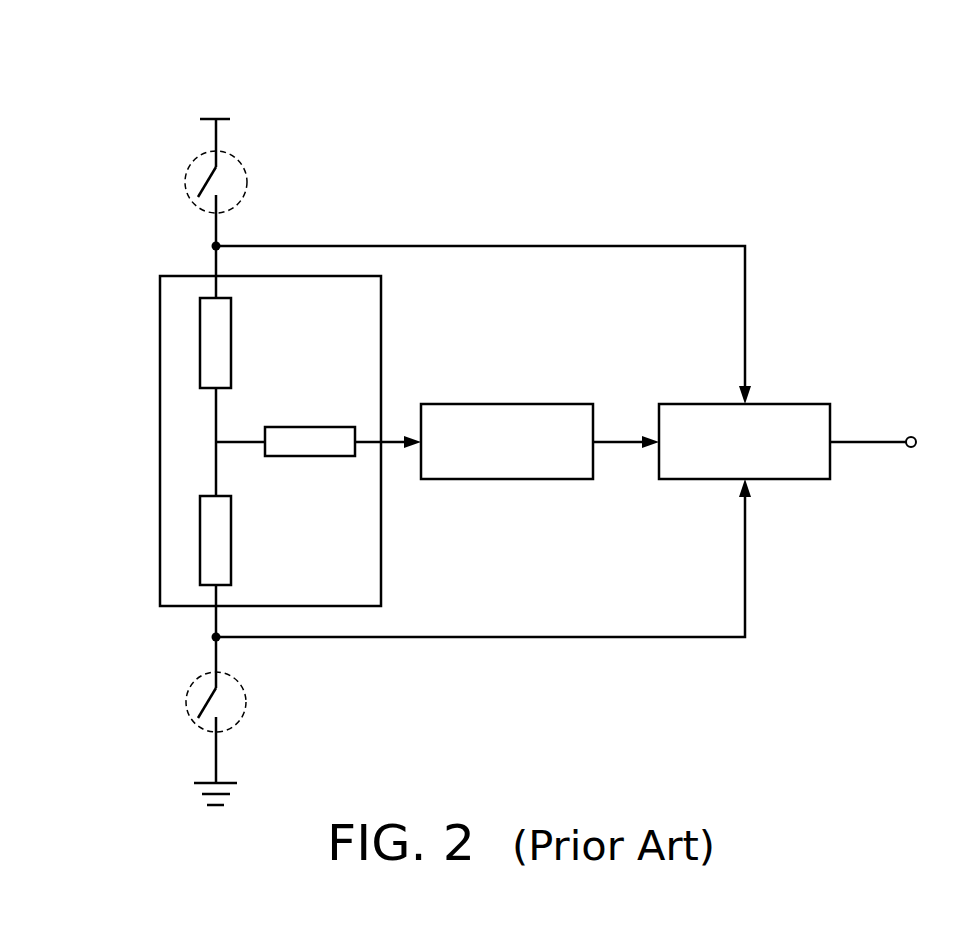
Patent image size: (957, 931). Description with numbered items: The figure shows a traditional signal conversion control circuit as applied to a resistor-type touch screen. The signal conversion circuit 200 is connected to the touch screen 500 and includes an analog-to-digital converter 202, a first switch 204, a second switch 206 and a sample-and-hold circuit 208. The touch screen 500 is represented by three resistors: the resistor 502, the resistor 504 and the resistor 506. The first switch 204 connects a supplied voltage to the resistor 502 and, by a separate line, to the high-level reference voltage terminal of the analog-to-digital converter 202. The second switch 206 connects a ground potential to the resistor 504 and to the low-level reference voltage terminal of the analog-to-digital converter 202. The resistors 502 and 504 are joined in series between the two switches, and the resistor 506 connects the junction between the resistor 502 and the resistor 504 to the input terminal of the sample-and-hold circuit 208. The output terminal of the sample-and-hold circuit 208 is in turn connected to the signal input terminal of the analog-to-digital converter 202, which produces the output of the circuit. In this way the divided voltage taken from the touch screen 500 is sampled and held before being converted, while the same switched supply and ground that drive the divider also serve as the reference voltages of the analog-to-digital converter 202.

The signal conversion circuit 200 is at (660, 104).
The analog-to-digital converter 202 is at (808, 404).
The first switch 204 is at (246, 179).
The second switch 206 is at (246, 700).
The sample-and-hold circuit 208 is at (508, 404).
The touch screen 500 is at (160, 442).
The resistor 502 is at (231, 318).
The resistor 504 is at (231, 532).
The resistor 506 is at (312, 427).